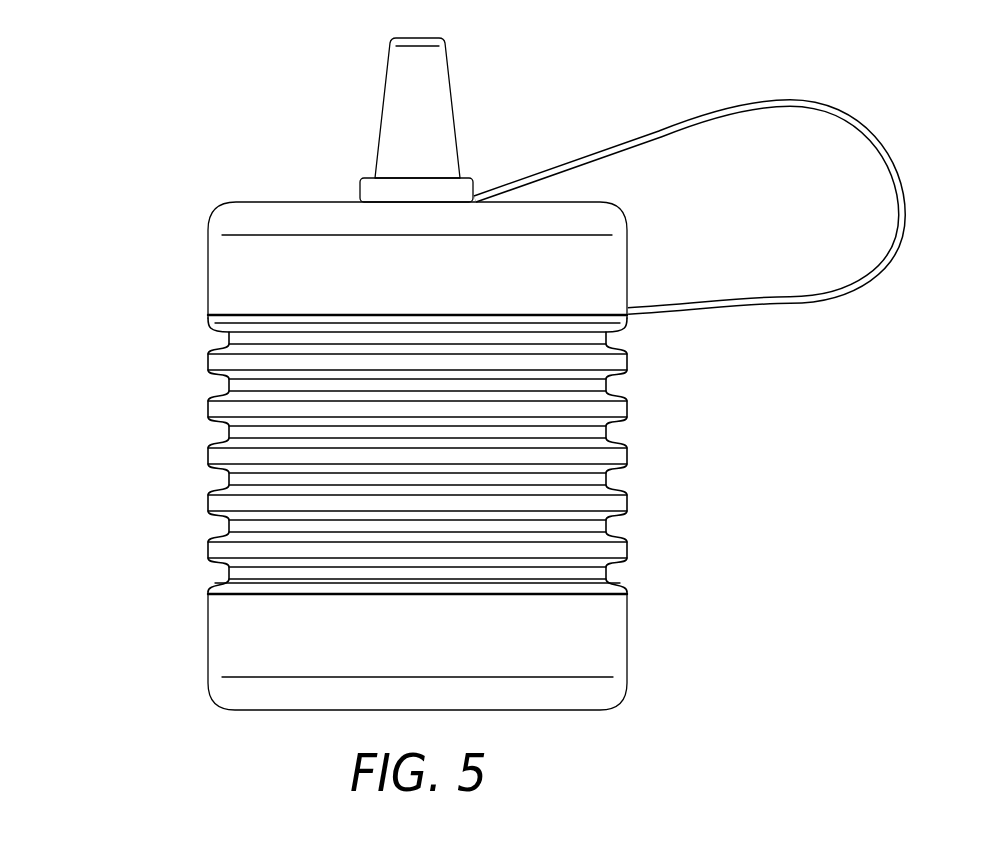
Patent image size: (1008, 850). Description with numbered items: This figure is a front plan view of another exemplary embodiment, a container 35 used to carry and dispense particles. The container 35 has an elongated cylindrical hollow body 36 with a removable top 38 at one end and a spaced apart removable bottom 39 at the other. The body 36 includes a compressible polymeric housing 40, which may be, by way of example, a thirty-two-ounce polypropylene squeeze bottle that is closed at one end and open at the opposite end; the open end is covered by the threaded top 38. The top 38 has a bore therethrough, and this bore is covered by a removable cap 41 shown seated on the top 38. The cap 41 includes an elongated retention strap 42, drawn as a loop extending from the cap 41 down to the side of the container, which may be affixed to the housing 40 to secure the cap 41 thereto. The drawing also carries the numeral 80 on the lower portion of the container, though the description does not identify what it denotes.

The container 35 is at (105, 423).
The elongated cylindrical hollow body 36 is at (638, 412).
The removable top 38 is at (266, 195).
The removable bottom 39 is at (196, 646).
The compressible polymeric housing 40 is at (212, 505).
The removable cap 41 is at (442, 115).
The elongated retention strap 42 is at (665, 130).
The label area on base 80 is at (605, 628).